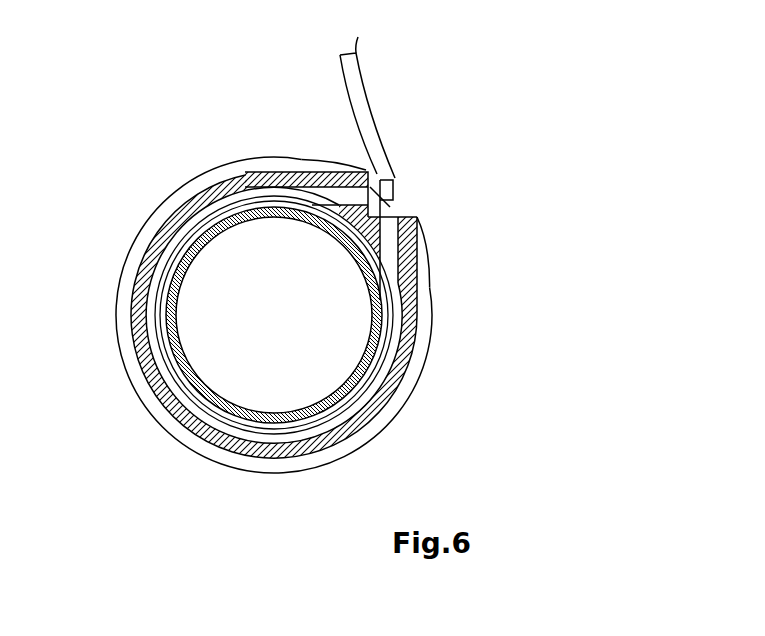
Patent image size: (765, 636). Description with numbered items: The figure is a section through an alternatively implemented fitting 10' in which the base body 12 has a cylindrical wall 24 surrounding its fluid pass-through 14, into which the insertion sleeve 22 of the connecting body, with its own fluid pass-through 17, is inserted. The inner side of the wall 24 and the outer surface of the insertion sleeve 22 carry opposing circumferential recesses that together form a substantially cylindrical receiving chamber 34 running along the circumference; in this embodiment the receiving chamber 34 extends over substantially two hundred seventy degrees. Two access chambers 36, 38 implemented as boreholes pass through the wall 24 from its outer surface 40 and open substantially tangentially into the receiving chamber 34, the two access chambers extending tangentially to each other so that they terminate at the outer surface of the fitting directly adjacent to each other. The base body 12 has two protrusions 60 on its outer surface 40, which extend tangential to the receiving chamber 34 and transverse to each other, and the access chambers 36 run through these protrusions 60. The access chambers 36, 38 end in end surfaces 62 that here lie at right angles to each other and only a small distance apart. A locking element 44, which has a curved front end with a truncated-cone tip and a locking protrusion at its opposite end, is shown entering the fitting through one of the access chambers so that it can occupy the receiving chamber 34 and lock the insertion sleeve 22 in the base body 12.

The fitting 10' is at (470, 173).
The base body 12 is at (424, 400).
The fluid pass-through 14 is at (318, 327).
The fluid pass-through 17 is at (274, 315).
The insertion sleeve 22 is at (178, 322).
The wall 24 is at (244, 186).
The receiving chamber 34 is at (147, 348).
The access chamber 36 is at (407, 210).
The access chamber 38 is at (348, 200).
The outer surface 40 is at (427, 330).
The locking element 44 is at (370, 99).
The protrusion 60 is at (318, 175).
The end surface 62 is at (391, 185).